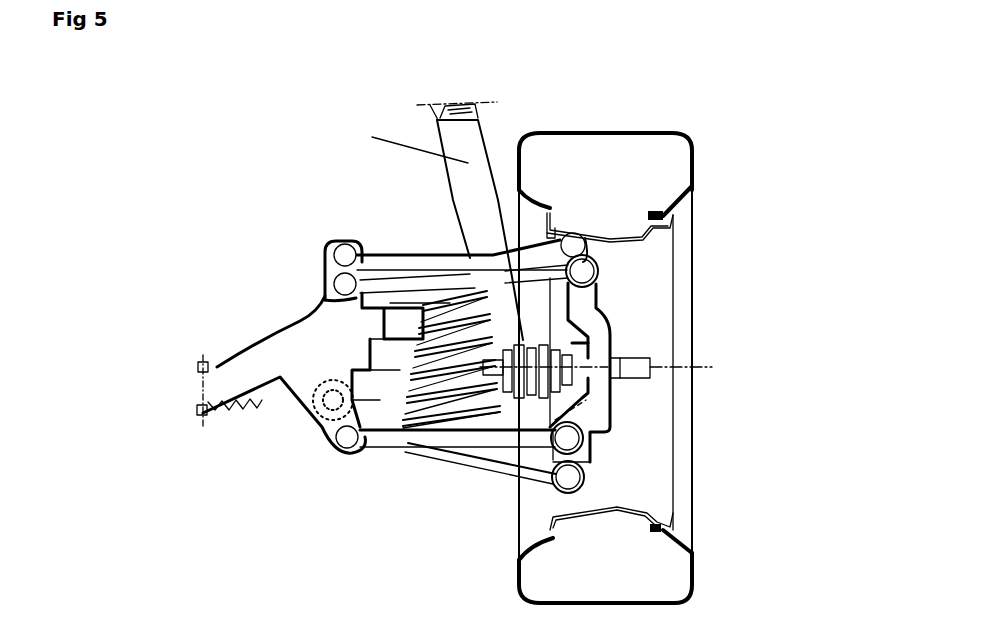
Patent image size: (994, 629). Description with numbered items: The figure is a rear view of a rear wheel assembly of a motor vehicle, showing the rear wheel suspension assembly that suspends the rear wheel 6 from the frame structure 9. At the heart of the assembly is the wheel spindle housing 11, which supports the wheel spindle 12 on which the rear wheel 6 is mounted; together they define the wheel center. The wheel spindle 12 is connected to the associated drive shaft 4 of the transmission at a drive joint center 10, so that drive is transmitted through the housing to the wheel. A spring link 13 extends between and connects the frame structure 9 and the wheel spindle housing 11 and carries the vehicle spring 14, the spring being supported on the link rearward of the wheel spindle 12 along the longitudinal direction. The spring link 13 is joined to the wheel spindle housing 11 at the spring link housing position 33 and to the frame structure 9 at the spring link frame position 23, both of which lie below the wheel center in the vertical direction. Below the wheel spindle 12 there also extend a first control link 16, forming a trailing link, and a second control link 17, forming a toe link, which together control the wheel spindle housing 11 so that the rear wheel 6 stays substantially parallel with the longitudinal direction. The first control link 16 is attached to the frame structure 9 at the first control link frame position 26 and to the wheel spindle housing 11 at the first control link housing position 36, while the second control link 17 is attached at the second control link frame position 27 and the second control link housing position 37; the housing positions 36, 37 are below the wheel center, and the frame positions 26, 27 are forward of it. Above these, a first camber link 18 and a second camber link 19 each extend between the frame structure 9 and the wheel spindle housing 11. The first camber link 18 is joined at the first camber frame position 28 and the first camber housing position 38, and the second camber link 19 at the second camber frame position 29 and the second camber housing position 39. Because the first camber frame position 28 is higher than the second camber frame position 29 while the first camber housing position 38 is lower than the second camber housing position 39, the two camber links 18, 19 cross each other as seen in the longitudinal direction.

The drive shaft 4 is at (377, 372).
The rear wheel 6 is at (682, 140).
The frame structure 9 is at (332, 320).
The drive joint center 10 is at (572, 367).
The wheel spindle housing 11 is at (587, 323).
The wheel spindle 12 is at (623, 368).
The spring link 13 is at (443, 437).
The vehicle spring 14 is at (373, 340).
The first control link 16 is at (510, 462).
The second control link 17 is at (388, 395).
The first camber link 18 is at (443, 260).
The second camber link 19 is at (388, 280).
The spring link frame position 23 is at (347, 438).
The first control link frame position 26 is at (333, 420).
The second control link frame position 27 is at (318, 395).
The first camber frame position 28 is at (348, 254).
The second camber frame position 29 is at (347, 284).
The spring link housing position 33 is at (572, 438).
The first control link housing position 36 is at (572, 477).
The second control link housing position 37 is at (590, 400).
The first camber housing position 38 is at (586, 268).
The second camber housing position 39 is at (578, 245).